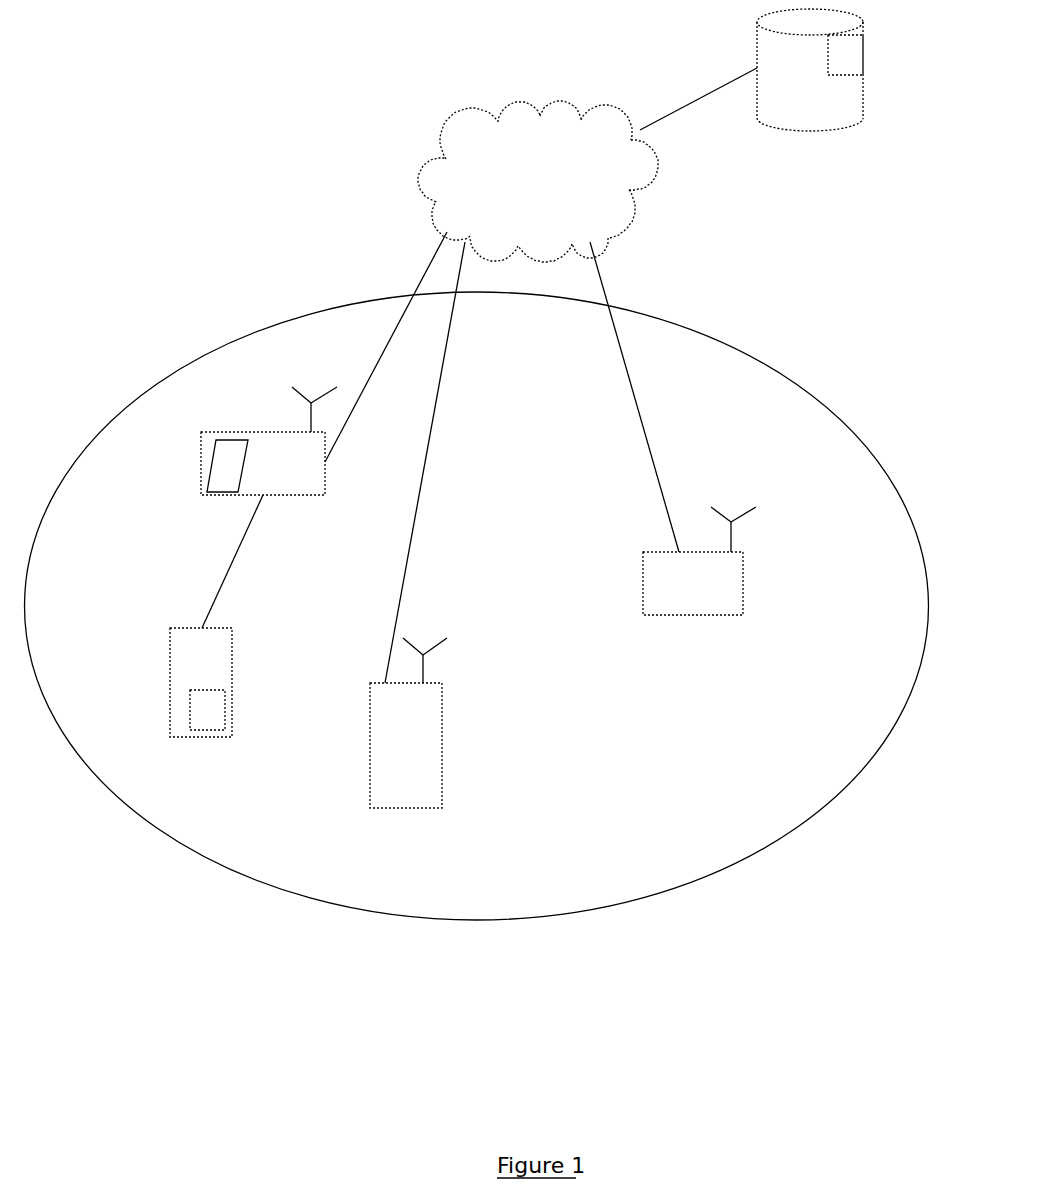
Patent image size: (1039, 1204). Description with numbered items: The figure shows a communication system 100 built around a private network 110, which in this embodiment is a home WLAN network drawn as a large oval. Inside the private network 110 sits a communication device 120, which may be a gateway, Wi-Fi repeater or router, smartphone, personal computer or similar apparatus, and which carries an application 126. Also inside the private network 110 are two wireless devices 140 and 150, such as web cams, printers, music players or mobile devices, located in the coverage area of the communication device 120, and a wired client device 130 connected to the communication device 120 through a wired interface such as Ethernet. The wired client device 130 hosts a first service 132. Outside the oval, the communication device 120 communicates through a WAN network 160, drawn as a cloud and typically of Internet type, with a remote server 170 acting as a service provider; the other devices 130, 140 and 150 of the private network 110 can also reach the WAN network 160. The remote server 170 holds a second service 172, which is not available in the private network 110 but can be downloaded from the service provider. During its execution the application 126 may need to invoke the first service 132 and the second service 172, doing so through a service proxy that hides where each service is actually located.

The communication system 100 is at (303, 170).
The private network 110 is at (703, 360).
The communication device 120 is at (227, 465).
The application 126 is at (183, 482).
The wired client device 130 is at (208, 689).
The first service 132 is at (210, 723).
The wireless device 140 is at (403, 758).
The wireless device 150 is at (732, 605).
The WAN network 160 is at (464, 164).
The remote server 170 is at (836, 78).
The second service 172 is at (847, 68).